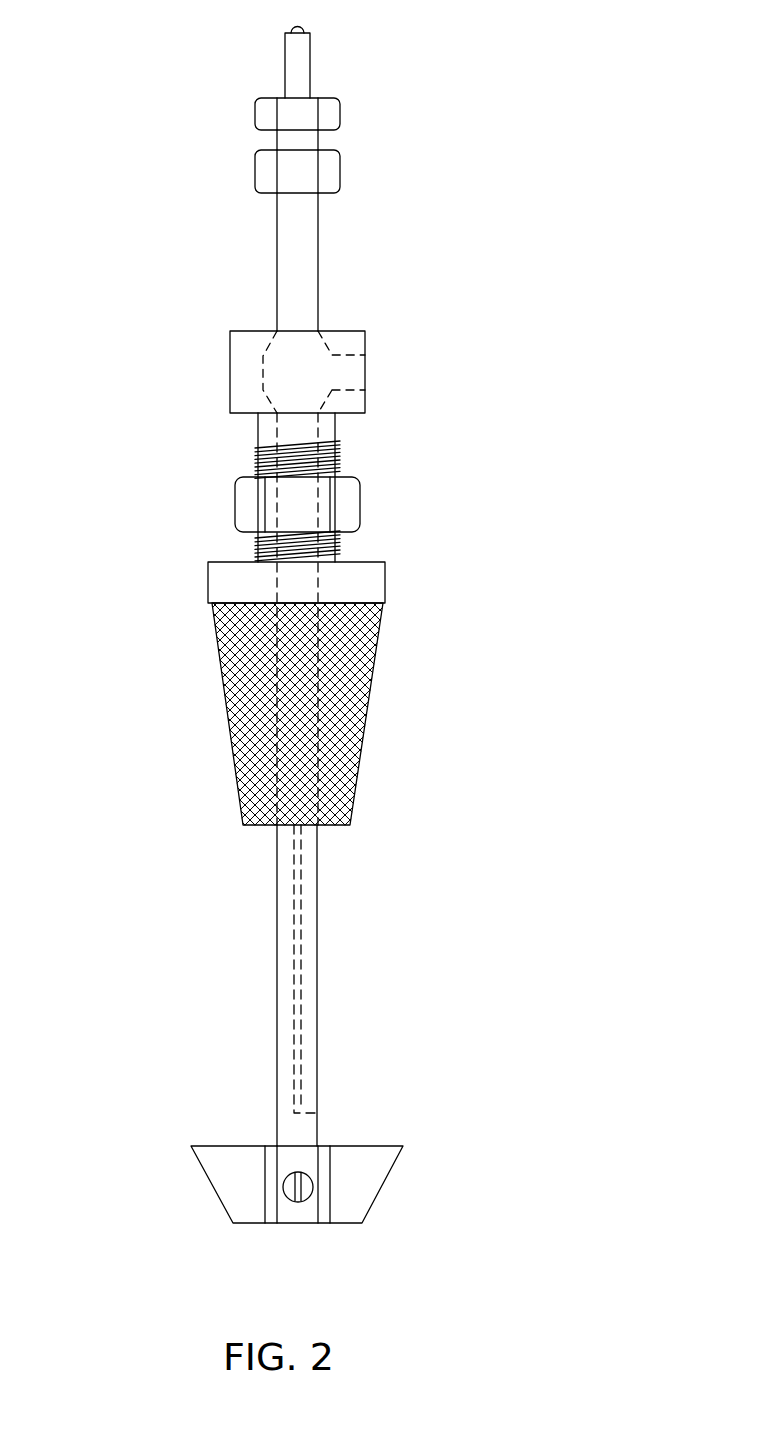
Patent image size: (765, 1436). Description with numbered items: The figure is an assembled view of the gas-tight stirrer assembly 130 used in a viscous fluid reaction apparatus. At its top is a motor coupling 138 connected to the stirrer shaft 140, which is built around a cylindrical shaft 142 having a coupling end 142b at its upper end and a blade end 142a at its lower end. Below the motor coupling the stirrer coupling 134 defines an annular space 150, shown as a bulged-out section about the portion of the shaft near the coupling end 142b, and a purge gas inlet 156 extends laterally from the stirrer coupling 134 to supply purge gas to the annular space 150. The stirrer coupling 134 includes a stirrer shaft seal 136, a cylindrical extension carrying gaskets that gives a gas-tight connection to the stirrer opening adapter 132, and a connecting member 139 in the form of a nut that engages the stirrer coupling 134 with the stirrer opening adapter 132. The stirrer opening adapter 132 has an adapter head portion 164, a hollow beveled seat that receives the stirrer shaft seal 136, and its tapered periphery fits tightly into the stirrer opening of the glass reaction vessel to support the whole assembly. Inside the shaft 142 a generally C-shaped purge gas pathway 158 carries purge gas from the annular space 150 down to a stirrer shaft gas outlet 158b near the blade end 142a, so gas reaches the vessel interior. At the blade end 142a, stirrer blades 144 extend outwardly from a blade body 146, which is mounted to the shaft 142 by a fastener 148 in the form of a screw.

The gas-tight stirrer assembly 130 is at (418, 44).
The motor coupling 138 is at (285, 62).
The coupling end 142b is at (321, 196).
The shaft 142 is at (318, 1047).
The purge gas inlet 156 is at (353, 372).
The annular space 150 is at (270, 365).
The stirrer coupling 134 is at (250, 434).
The stirrer shaft seal 136 is at (340, 452).
The connecting member 139 is at (236, 498).
The adapter head portion 164 is at (223, 583).
The stirrer opening adapter 132 is at (208, 650).
The purge gas pathway 158 is at (304, 897).
The stirrer shaft gas outlet 158b is at (326, 1112).
The stirrer shaft 140 is at (272, 964).
The stirrer blades 144 is at (396, 1165).
The blade end 142a is at (297, 1223).
The blade body 146 is at (285, 1153).
The fastener 148 is at (313, 1182).